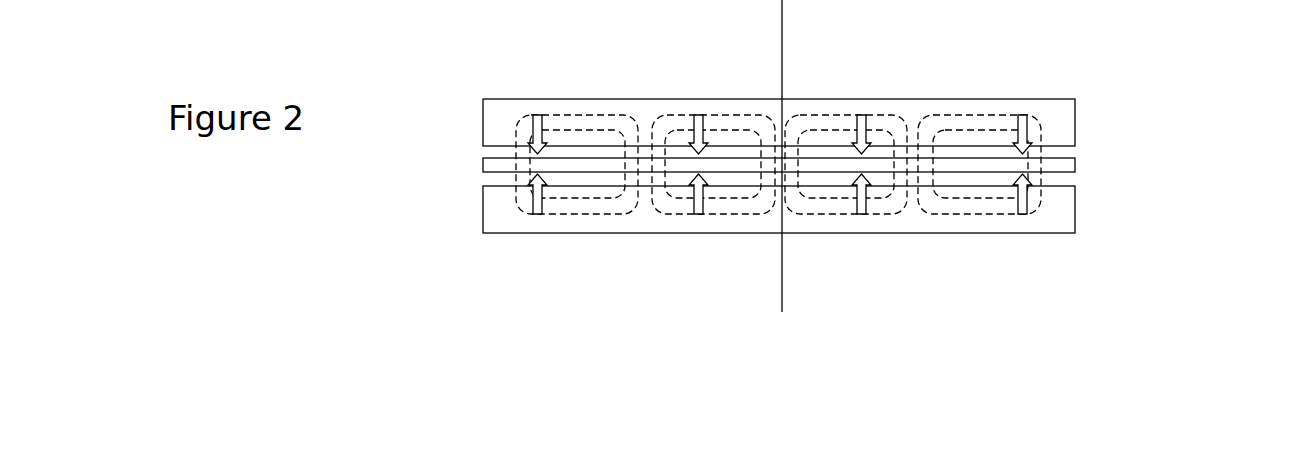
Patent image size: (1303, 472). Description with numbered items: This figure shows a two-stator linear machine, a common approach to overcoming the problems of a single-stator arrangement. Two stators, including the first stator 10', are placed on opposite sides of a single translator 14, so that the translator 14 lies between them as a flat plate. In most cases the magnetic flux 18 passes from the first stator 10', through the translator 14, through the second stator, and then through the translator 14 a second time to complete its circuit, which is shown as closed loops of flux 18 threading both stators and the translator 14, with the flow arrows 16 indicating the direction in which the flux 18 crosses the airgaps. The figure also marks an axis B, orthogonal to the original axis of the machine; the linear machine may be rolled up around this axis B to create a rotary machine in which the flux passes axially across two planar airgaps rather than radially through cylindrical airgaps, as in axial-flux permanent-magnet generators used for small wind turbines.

The first stator 10' is at (736, 233).
The translator 14 is at (482, 165).
The flow arrows 16 is at (1023, 123).
The magnetic flux 18 is at (898, 198).
The axis B is at (780, 275).